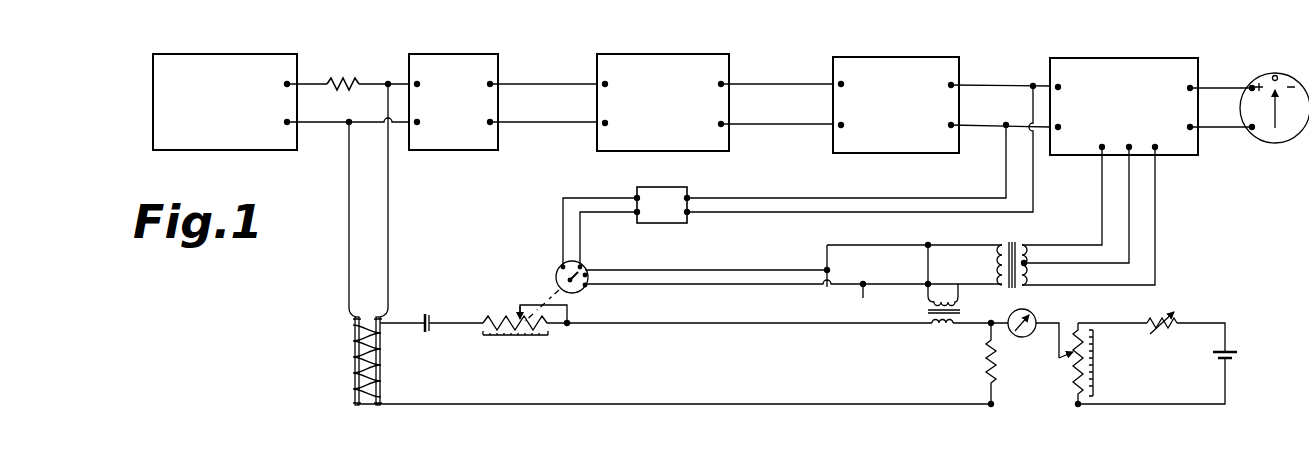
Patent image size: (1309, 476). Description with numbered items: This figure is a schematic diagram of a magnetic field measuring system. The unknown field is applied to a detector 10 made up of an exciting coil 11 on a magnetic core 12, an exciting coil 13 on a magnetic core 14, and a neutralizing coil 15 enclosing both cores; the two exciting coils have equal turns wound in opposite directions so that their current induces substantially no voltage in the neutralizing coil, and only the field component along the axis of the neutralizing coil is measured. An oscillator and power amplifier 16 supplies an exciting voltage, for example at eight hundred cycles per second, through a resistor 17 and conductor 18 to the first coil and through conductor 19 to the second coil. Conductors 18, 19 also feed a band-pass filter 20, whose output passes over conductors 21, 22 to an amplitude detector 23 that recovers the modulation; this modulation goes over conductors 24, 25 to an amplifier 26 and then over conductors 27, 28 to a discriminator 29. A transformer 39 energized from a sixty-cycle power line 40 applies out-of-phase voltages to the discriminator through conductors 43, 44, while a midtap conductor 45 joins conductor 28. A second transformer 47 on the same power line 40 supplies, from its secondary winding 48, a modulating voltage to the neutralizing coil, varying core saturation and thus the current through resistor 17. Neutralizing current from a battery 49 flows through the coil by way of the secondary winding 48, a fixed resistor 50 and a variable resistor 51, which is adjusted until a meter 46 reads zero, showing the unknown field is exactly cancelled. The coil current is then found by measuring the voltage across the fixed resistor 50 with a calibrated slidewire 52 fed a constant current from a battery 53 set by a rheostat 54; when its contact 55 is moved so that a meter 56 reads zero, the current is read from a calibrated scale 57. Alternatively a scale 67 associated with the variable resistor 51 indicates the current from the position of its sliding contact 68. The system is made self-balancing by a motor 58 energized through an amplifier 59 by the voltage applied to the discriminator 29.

The detector 10 is at (302, 382).
The exciting coil 11 is at (380, 330).
The magnetic core 12 is at (381, 372).
The exciting coil 13 is at (354, 344).
The magnetic core 14 is at (355, 390).
The neutralizing coil 15 is at (381, 388).
The oscillator and power amplifier 16 is at (183, 54).
The resistor 17 is at (346, 78).
The conductor 18 is at (388, 178).
The conductor 19 is at (349, 178).
The filter 20 is at (445, 54).
The conductor 21 is at (532, 83).
The conductor 22 is at (547, 124).
The amplitude detector 23 is at (653, 54).
The conductor 24 is at (767, 83).
The conductor 25 is at (783, 126).
The amplifier 26 is at (867, 57).
The conductor 27 is at (984, 84).
The conductor 28 is at (988, 128).
The discriminator 29 is at (1082, 58).
The transformer 39 is at (1014, 254).
The electrical power line 40 is at (829, 290).
The conductor 43 is at (1157, 206).
The conductor 44 is at (1100, 206).
The conductor 45 is at (1131, 226).
The meter 46 is at (1256, 77).
The transformer 47 is at (963, 313).
The secondary winding 48 is at (941, 328).
The battery 49 is at (425, 314).
The fixed resistor 50 is at (986, 372).
The variable resistor 51 is at (487, 318).
The calibrated slidewire 52 is at (1070, 378).
The battery 53 is at (1240, 355).
The rheostat 54 is at (1164, 314).
The contact 55 is at (1068, 360).
The meter 56 is at (1030, 317).
The calibrated scale 57 is at (1096, 359).
The motor 58 is at (556, 276).
The amplifier 59 is at (656, 191).
The scale 67 is at (544, 339).
The sliding contact 68 is at (518, 316).